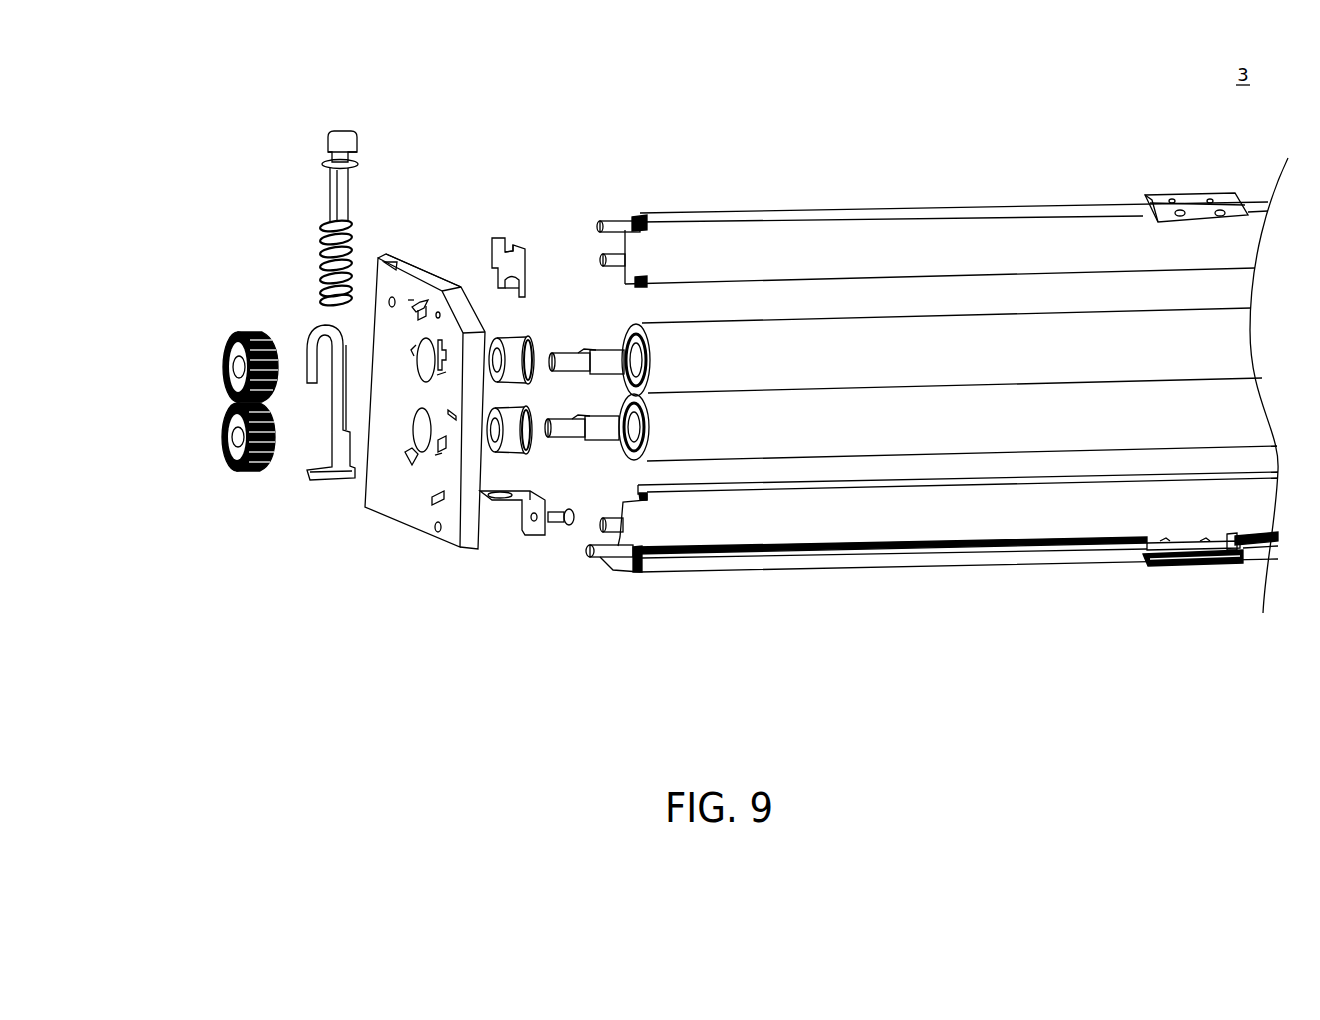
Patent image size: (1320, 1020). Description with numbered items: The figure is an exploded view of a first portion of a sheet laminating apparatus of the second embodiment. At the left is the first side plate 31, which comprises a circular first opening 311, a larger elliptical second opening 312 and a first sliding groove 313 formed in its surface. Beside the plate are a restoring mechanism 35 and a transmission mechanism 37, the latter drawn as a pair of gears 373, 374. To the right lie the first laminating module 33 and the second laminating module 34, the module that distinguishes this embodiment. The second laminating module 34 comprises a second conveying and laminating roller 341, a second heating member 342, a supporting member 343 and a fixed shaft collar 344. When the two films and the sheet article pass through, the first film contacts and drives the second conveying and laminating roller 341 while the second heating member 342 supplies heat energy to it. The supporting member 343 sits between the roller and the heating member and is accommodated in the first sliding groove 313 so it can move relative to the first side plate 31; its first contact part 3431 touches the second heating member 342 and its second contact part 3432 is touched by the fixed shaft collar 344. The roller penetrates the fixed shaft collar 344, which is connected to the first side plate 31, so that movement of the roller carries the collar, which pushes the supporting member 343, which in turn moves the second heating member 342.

The first side plate 31 is at (422, 395).
The first opening 311 is at (422, 442).
The second opening 312 is at (417, 372).
The first sliding groove 313 is at (447, 281).
The first laminating module 33 is at (958, 470).
The second laminating module 34 is at (916, 391).
The second conveying and laminating roller 341 is at (883, 345).
The second heating member 342 is at (841, 240).
The supporting member 343 is at (537, 232).
The first contact part 3431 is at (505, 242).
The second contact part 3432 is at (518, 289).
The fixed shaft collar 344 is at (515, 352).
The restoring mechanism 35 is at (300, 305).
The transmission mechanism 37 is at (215, 405).
The lower gear 373 is at (233, 471).
The upper gear 374 is at (238, 333).